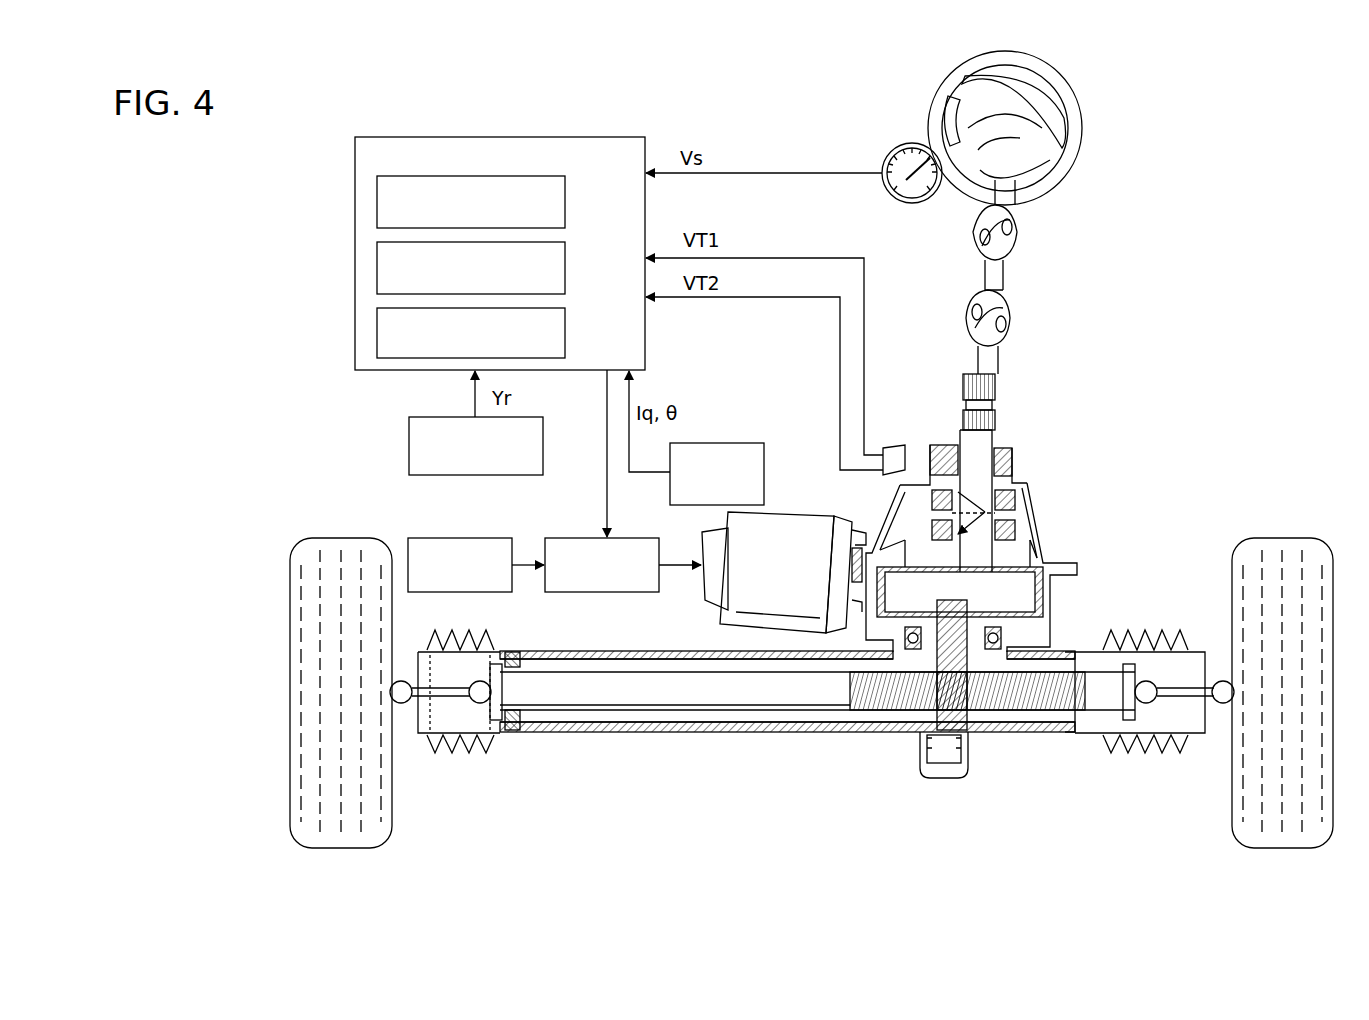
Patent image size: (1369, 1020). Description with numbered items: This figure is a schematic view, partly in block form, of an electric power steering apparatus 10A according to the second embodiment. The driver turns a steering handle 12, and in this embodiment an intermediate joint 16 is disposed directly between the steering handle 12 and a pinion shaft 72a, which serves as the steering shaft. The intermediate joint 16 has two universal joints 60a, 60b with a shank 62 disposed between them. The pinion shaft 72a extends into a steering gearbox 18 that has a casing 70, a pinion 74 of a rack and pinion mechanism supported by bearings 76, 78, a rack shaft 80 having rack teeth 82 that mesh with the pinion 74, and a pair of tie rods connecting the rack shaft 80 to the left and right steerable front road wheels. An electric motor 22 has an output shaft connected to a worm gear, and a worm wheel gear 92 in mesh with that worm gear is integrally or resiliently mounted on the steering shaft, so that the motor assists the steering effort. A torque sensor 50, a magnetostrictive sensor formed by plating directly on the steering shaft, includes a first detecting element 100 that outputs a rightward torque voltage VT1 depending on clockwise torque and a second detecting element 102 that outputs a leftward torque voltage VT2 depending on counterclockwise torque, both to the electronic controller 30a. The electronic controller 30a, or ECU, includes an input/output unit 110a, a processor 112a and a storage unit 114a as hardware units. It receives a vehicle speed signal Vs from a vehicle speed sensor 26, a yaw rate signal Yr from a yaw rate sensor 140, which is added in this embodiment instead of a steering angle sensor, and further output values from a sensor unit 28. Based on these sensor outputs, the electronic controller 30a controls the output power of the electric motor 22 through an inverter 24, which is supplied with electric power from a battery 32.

The electric power steering apparatus 10A is at (232, 194).
The steering handle 12 is at (1066, 82).
The intermediate joint 16 is at (1040, 270).
The steering gearbox 18 is at (812, 697).
The electric motor 22 is at (712, 605).
The inverter 24 is at (602, 592).
The vehicle speed sensor 26 is at (893, 150).
The sensor unit 28 is at (745, 443).
The electronic controller 30a is at (500, 236).
The battery 32 is at (463, 538).
The torque sensor 50 is at (1007, 548).
The universal joint 60a is at (973, 230).
The universal joint 60b is at (966, 318).
The shank 62 is at (985, 274).
The casing 70 is at (740, 732).
The pinion shaft 72a is at (996, 382).
The pinion 74 is at (950, 722).
The bearing 76 is at (1005, 638).
The bearing 78 is at (920, 748).
The rack shaft 80 is at (598, 700).
The rack teeth 82 is at (1030, 705).
The worm wheel gear 92 is at (1020, 608).
The first detecting element 100 is at (1020, 498).
The second detecting element 102 is at (1020, 522).
The input/output unit 110a is at (566, 197).
The processor 112a is at (566, 263).
The storage unit 114a is at (566, 329).
The yaw rate sensor 140 is at (409, 445).